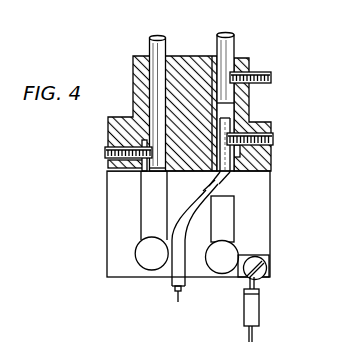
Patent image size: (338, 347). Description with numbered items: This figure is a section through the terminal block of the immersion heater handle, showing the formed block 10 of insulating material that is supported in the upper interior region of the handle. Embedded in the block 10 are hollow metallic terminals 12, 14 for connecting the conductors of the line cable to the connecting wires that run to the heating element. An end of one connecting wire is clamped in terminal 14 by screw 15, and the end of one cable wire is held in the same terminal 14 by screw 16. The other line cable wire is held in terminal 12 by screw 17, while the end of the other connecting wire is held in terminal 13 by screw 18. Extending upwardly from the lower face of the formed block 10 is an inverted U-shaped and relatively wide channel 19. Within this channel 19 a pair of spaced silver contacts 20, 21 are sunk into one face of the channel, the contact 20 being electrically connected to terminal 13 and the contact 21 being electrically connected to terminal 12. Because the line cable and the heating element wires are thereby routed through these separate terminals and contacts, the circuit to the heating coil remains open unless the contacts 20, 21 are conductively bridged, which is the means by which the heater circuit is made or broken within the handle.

The formed block 10 is at (132, 68).
The hollow metallic terminal 12 is at (141, 172).
The terminal 13 is at (239, 274).
The hollow metallic terminal 14 is at (239, 100).
The screw 15 is at (273, 145).
The screw 16 is at (264, 71).
The screw 17 is at (104, 153).
The screw 18 is at (271, 272).
The channel 19 is at (107, 254).
The silver contact 20 is at (220, 267).
The silver contact 21 is at (143, 253).